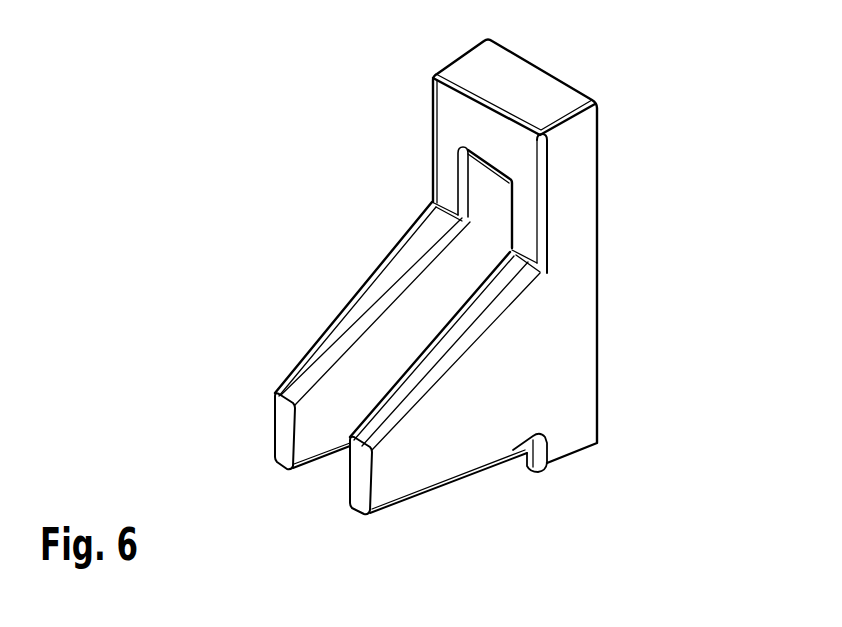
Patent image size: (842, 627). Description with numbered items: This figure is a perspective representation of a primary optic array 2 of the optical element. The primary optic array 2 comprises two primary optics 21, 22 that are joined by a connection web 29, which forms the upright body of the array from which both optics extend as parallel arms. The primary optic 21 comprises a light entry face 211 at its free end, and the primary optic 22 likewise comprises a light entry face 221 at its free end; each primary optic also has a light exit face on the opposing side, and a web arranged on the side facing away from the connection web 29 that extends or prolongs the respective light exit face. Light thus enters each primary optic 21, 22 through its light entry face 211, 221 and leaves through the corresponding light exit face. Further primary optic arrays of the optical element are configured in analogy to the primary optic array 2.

The primary optic array 2 is at (638, 281).
The primary optic 21 is at (317, 450).
The primary optic 22 is at (395, 490).
The connection web 29 is at (538, 87).
The light entry face 211 is at (275, 458).
The light entry face 221 is at (350, 502).